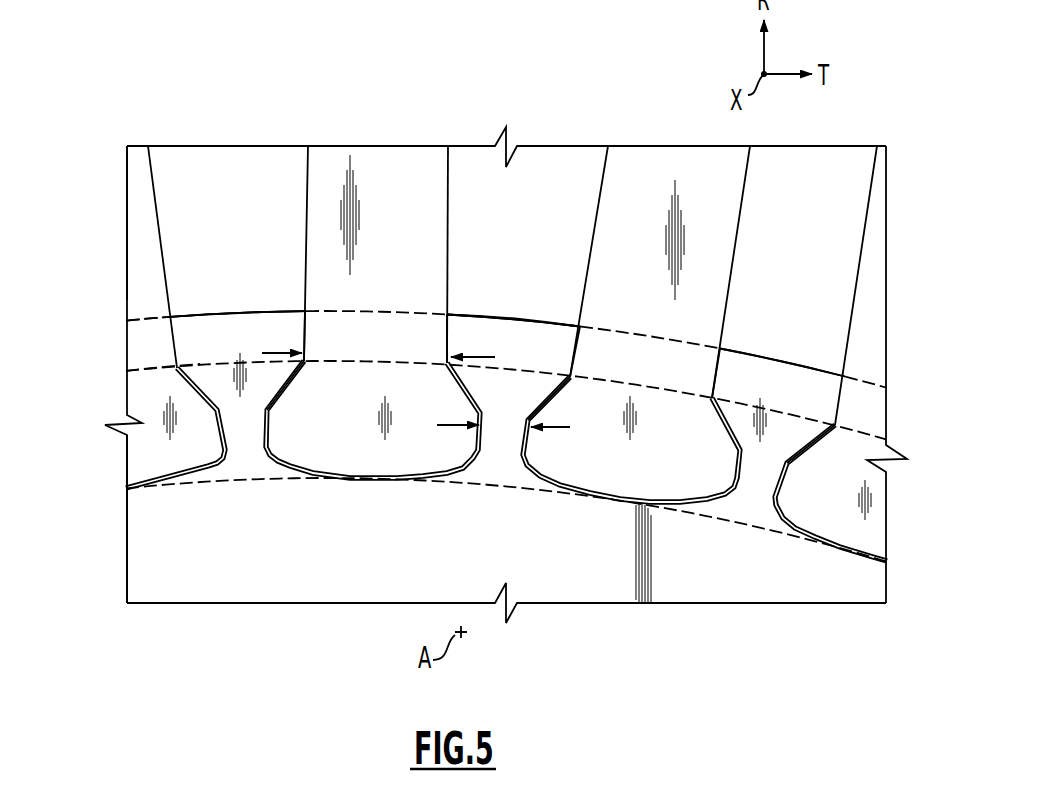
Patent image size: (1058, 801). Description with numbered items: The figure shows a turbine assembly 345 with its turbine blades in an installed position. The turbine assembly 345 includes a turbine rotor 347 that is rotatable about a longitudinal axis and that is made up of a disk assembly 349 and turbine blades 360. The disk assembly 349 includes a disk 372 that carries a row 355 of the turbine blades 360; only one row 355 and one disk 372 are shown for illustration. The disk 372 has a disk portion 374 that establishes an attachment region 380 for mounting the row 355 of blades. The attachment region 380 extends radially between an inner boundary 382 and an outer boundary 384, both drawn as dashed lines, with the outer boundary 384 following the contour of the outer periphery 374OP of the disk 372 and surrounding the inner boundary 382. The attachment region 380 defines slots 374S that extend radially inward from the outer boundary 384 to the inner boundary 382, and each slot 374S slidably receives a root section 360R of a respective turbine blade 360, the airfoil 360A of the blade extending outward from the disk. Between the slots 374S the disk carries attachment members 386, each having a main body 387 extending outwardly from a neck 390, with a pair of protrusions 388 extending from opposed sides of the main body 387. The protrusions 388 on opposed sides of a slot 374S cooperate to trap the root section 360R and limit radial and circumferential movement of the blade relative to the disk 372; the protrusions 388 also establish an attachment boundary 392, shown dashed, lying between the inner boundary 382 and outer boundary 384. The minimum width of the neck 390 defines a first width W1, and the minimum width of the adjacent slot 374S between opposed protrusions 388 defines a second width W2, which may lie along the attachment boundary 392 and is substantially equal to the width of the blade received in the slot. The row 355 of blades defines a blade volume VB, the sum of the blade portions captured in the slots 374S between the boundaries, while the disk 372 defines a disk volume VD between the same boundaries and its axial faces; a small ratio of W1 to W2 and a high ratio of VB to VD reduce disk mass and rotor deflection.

The turbine assembly 345 is at (113, 108).
The turbine rotor 347 is at (163, 145).
The disk assembly 349 is at (125, 568).
The row of turbine blades 355 is at (112, 201).
The turbine blade 360 is at (522, 325).
The airfoil 360A is at (437, 212).
The root section 360R is at (400, 460).
The disk 372 is at (787, 604).
The disk portion 374 is at (877, 590).
The outer periphery 374OP is at (465, 313).
The slot 374S is at (327, 460).
The attachment region 380 is at (125, 375).
The inner boundary 382 is at (215, 482).
The outer boundary 384 is at (140, 322).
The attachment member 386 is at (265, 336).
The main body 387 is at (232, 333).
The protrusion 388 is at (306, 337).
The neck 390 is at (253, 437).
The attachment boundary 392 is at (143, 367).
The first width W1 is at (457, 422).
The second width W2 is at (475, 352).
The blade volume VB is at (152, 317).
The disk volume VD is at (212, 314).